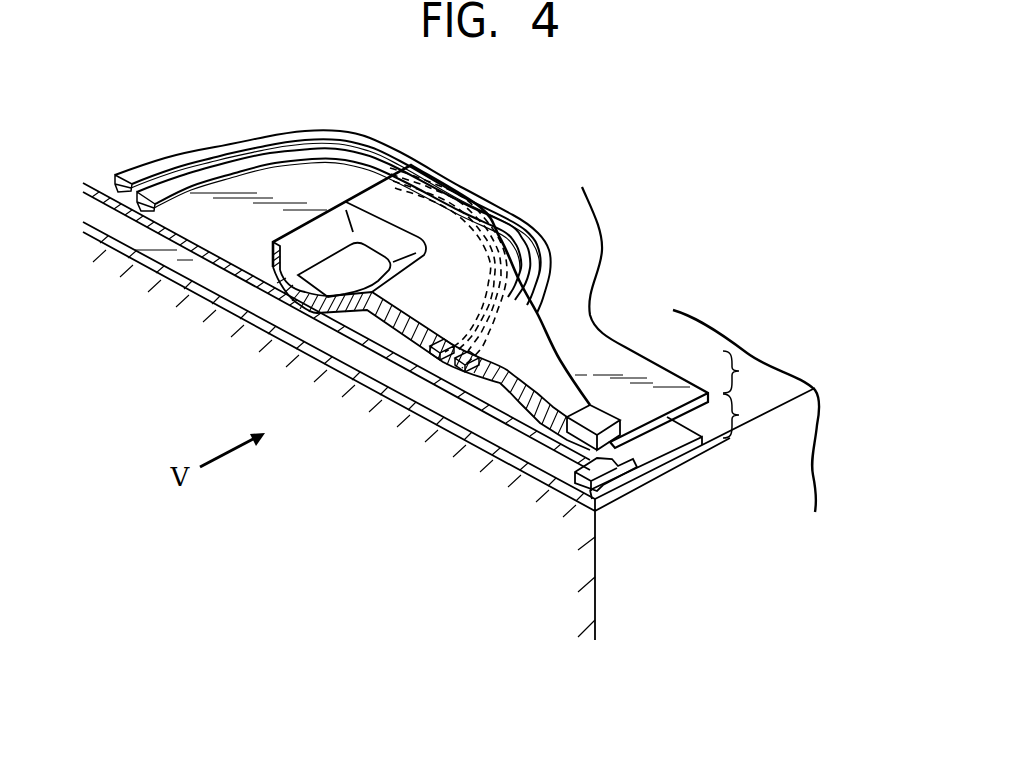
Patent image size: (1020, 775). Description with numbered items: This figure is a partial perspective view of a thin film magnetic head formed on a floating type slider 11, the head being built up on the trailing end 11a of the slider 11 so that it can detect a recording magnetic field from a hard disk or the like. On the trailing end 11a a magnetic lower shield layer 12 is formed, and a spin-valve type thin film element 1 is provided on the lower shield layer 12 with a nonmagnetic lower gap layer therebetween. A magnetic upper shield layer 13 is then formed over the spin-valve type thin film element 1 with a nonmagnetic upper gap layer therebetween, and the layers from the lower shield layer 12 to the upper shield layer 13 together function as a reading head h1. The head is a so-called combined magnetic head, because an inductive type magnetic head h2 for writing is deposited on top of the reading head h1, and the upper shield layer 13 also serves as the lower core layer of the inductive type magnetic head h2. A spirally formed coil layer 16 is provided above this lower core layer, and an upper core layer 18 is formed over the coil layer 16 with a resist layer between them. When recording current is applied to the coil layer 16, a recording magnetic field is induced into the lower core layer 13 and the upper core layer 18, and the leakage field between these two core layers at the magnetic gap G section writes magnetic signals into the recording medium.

The spin-valve type thin film element 1 is at (602, 482).
The floating type slider 11 is at (510, 513).
The trailing end 11a is at (787, 383).
The lower shield layer 12 is at (643, 480).
The upper shield layer 13 is at (620, 357).
The coil layer 16 is at (203, 150).
The upper core layer 18 is at (398, 350).
The magnetic gap G is at (611, 443).
The reading head h1 is at (733, 415).
The inductive type magnetic head h2 is at (742, 357).